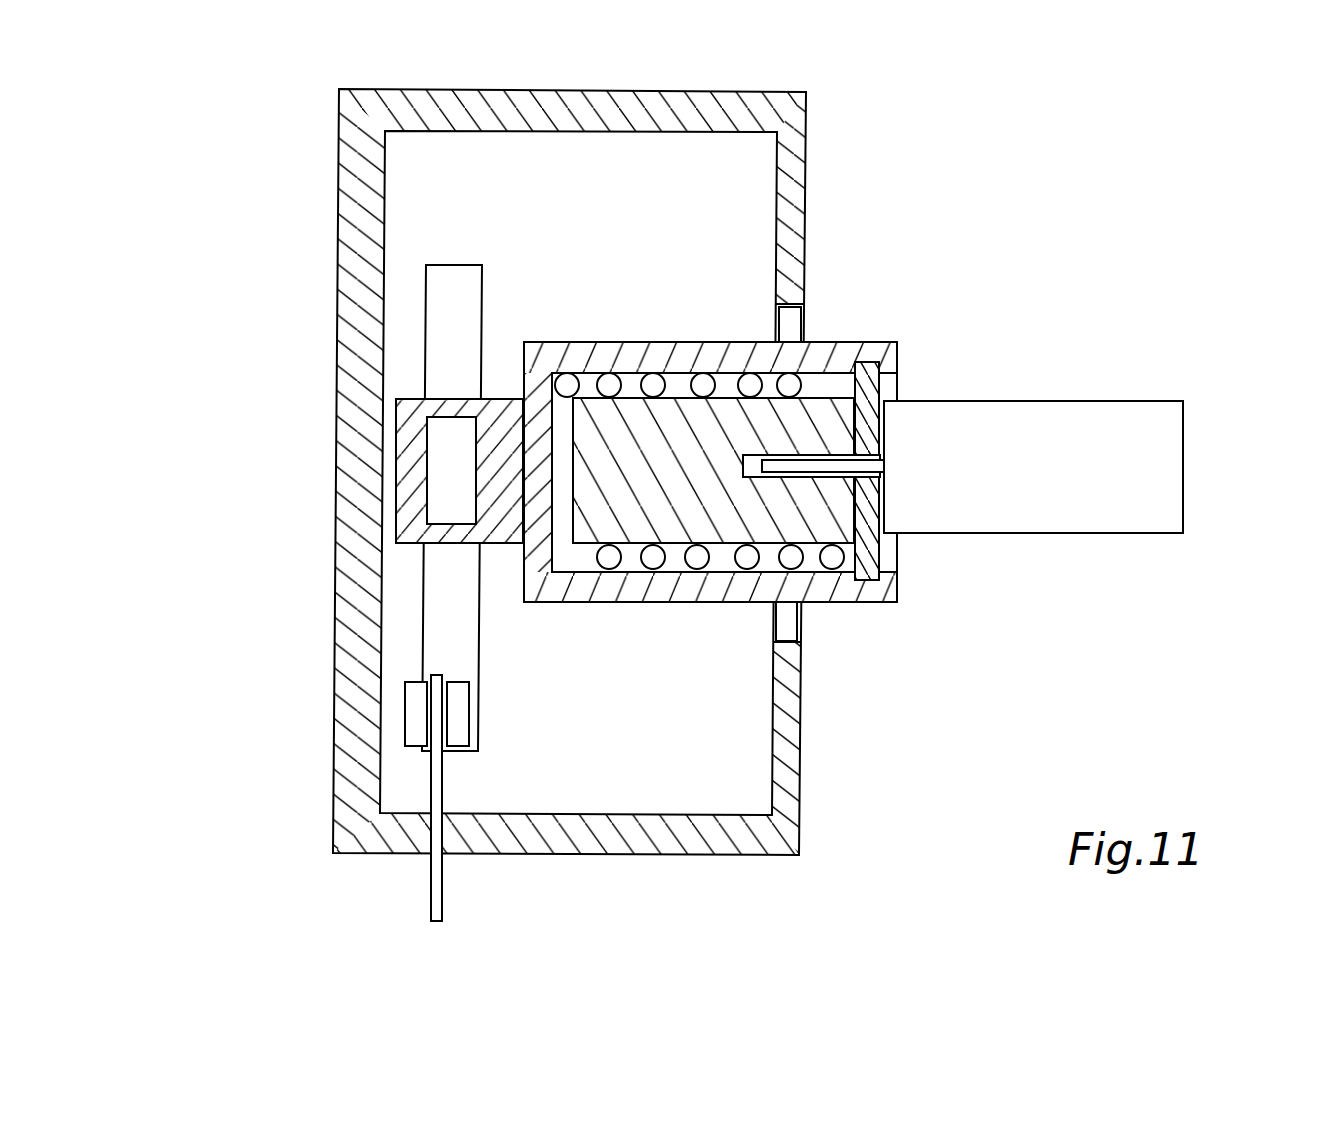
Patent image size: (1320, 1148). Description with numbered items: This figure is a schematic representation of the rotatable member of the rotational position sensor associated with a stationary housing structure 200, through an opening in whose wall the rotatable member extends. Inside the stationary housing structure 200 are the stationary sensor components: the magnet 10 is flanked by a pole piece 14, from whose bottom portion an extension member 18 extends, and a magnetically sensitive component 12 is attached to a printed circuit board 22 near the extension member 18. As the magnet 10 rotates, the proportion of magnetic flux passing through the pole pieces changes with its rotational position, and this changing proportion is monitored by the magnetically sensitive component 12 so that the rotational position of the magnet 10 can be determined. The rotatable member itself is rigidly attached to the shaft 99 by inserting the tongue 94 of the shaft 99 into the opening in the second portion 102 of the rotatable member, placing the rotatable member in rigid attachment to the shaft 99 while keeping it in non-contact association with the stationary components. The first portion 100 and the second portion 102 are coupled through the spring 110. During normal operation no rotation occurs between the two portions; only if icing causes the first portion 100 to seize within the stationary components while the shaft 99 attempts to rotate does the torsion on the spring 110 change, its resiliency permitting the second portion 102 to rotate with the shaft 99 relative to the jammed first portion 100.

The magnet 10 is at (442, 474).
The magnetically sensitive component 12 is at (458, 727).
The pole piece 14 is at (440, 336).
The extension member 18 is at (413, 712).
The printed circuit board 22 is at (438, 903).
The tongue 94 is at (813, 468).
The shaft 99 is at (1160, 440).
The first portion 100 is at (592, 593).
The second portion 102 is at (760, 518).
The spring 110 is at (792, 385).
The stationary housing structure 200 is at (795, 222).